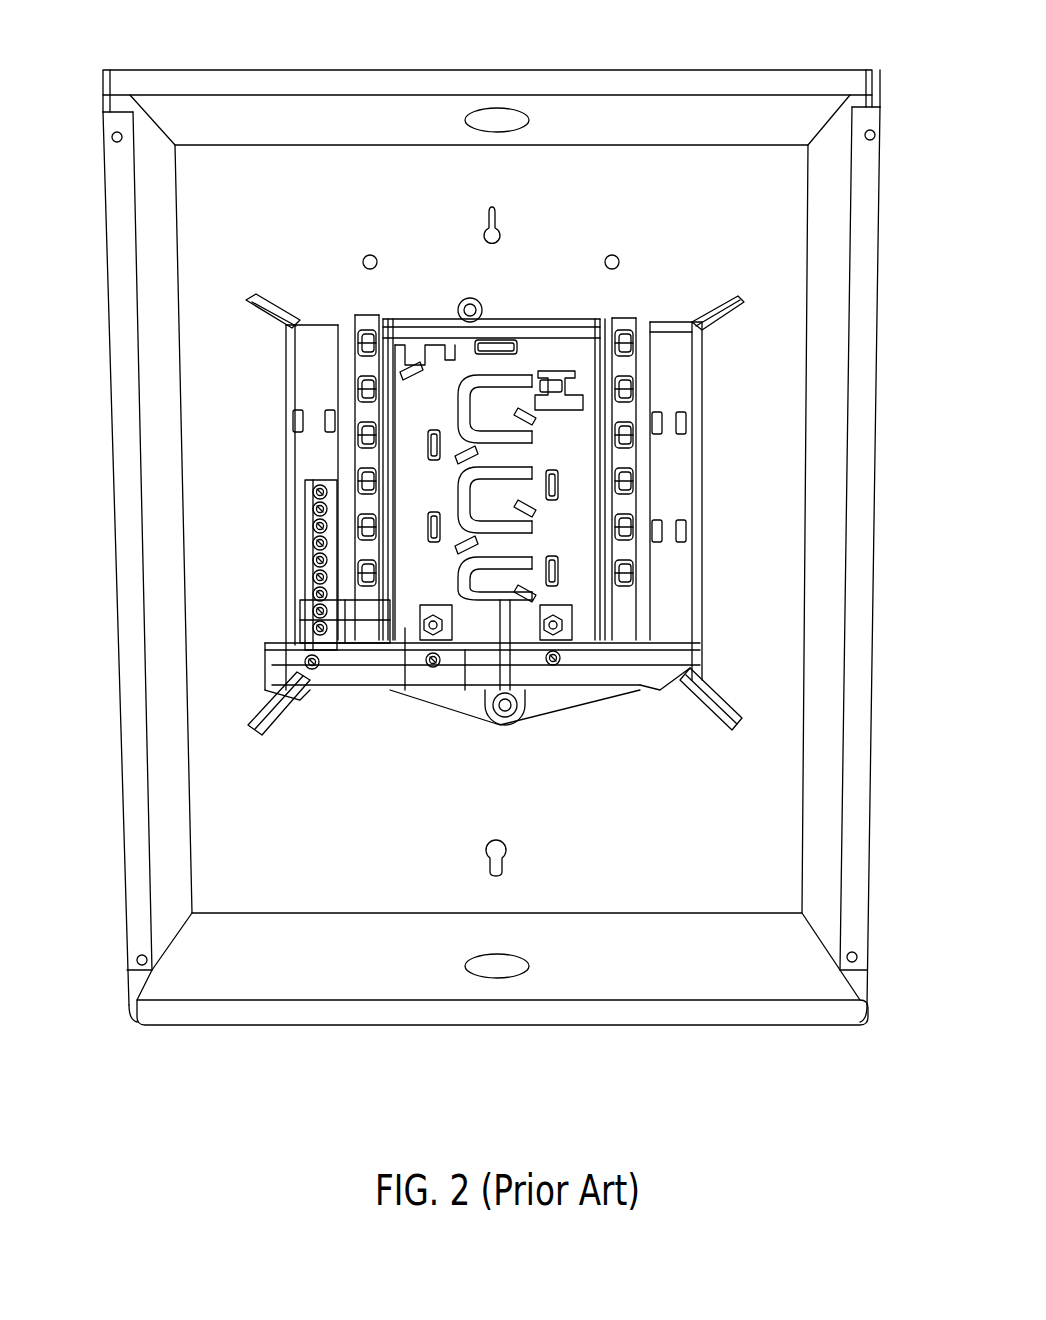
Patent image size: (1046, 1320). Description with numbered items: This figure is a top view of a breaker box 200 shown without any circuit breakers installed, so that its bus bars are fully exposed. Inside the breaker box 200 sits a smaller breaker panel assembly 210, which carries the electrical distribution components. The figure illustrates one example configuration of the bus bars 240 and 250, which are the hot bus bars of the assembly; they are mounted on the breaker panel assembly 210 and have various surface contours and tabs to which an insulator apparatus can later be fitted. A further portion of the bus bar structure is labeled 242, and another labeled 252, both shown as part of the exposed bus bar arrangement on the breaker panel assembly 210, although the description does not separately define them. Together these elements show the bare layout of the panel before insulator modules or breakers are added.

The breaker box 200 is at (495, 520).
The breaker panel assembly 210 is at (521, 476).
The bus bar 240 is at (607, 343).
The bus bar 242 is at (553, 416).
The bus bar 250 is at (386, 457).
The tab 252 is at (450, 285).